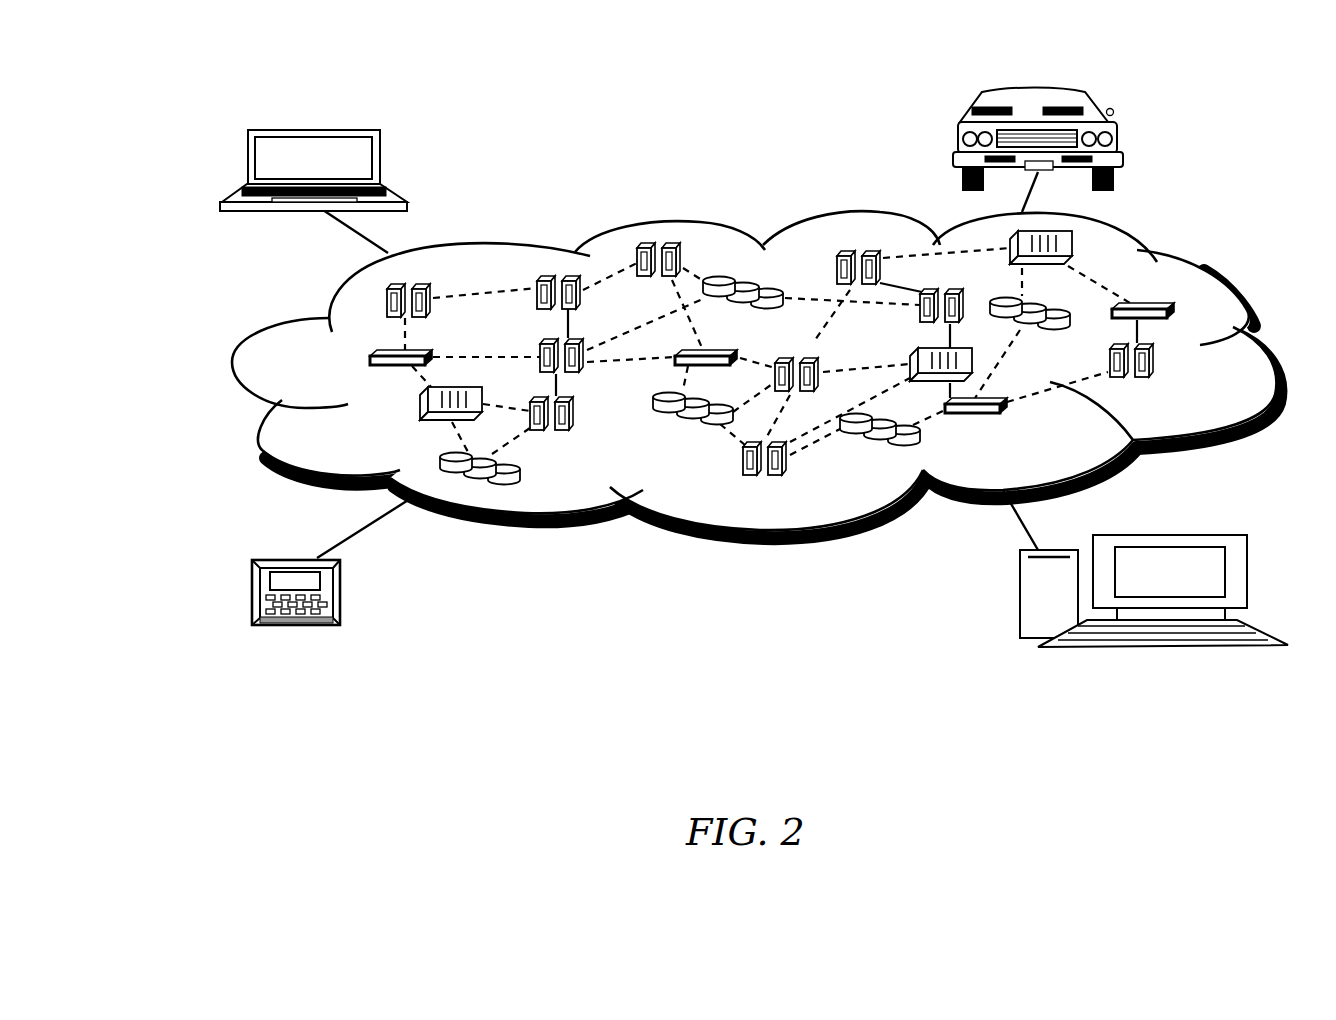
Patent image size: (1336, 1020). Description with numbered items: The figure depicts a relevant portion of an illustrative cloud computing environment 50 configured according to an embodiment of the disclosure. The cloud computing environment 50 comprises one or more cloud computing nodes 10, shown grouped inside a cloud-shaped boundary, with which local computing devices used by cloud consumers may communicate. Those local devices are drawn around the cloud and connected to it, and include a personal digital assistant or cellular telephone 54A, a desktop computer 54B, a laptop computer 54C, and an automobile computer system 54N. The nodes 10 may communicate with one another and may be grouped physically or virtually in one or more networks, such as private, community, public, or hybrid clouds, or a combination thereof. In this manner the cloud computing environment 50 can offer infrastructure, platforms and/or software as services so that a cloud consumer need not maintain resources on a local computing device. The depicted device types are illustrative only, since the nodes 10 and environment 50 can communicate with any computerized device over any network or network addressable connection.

The cloud computing nodes 10 is at (299, 435).
The cloud computing environment 50 is at (730, 532).
The personal digital assistant (PDA) or cellular telephone 54A is at (252, 597).
The desktop computer 54B is at (1020, 590).
The laptop computer 54C is at (248, 137).
The automobile computer system 54N is at (958, 128).